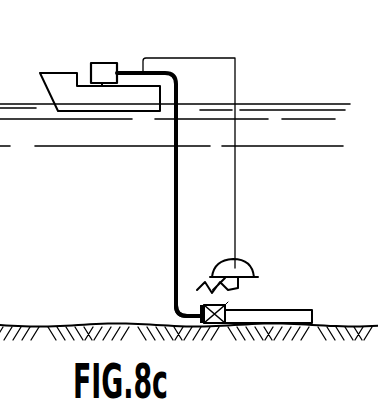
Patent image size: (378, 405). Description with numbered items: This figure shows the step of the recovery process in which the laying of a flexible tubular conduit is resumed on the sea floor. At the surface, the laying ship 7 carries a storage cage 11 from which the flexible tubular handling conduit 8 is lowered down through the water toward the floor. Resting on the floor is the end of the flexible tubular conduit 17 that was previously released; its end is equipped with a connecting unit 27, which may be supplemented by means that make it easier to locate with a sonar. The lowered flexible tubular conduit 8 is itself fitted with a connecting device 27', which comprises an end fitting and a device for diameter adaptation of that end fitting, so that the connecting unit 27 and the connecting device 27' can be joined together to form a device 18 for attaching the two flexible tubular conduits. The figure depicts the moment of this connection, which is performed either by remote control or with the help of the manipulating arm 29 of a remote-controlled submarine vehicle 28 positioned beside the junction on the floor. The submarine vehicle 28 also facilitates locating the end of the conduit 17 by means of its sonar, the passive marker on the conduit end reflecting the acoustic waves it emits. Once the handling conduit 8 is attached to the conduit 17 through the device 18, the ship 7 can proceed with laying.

The ship 7 is at (58, 72).
The storage cage 11 is at (104, 63).
The flexible tubular handling conduit 8 is at (174, 200).
The remote-controlled submarine vehicle 28 is at (228, 266).
The manipulating arm 29 is at (197, 290).
The connecting unit 27 is at (220, 345).
The connecting device 27' is at (162, 296).
The device for attaching 18 is at (232, 300).
The flexible tubular conduit 17 is at (285, 315).